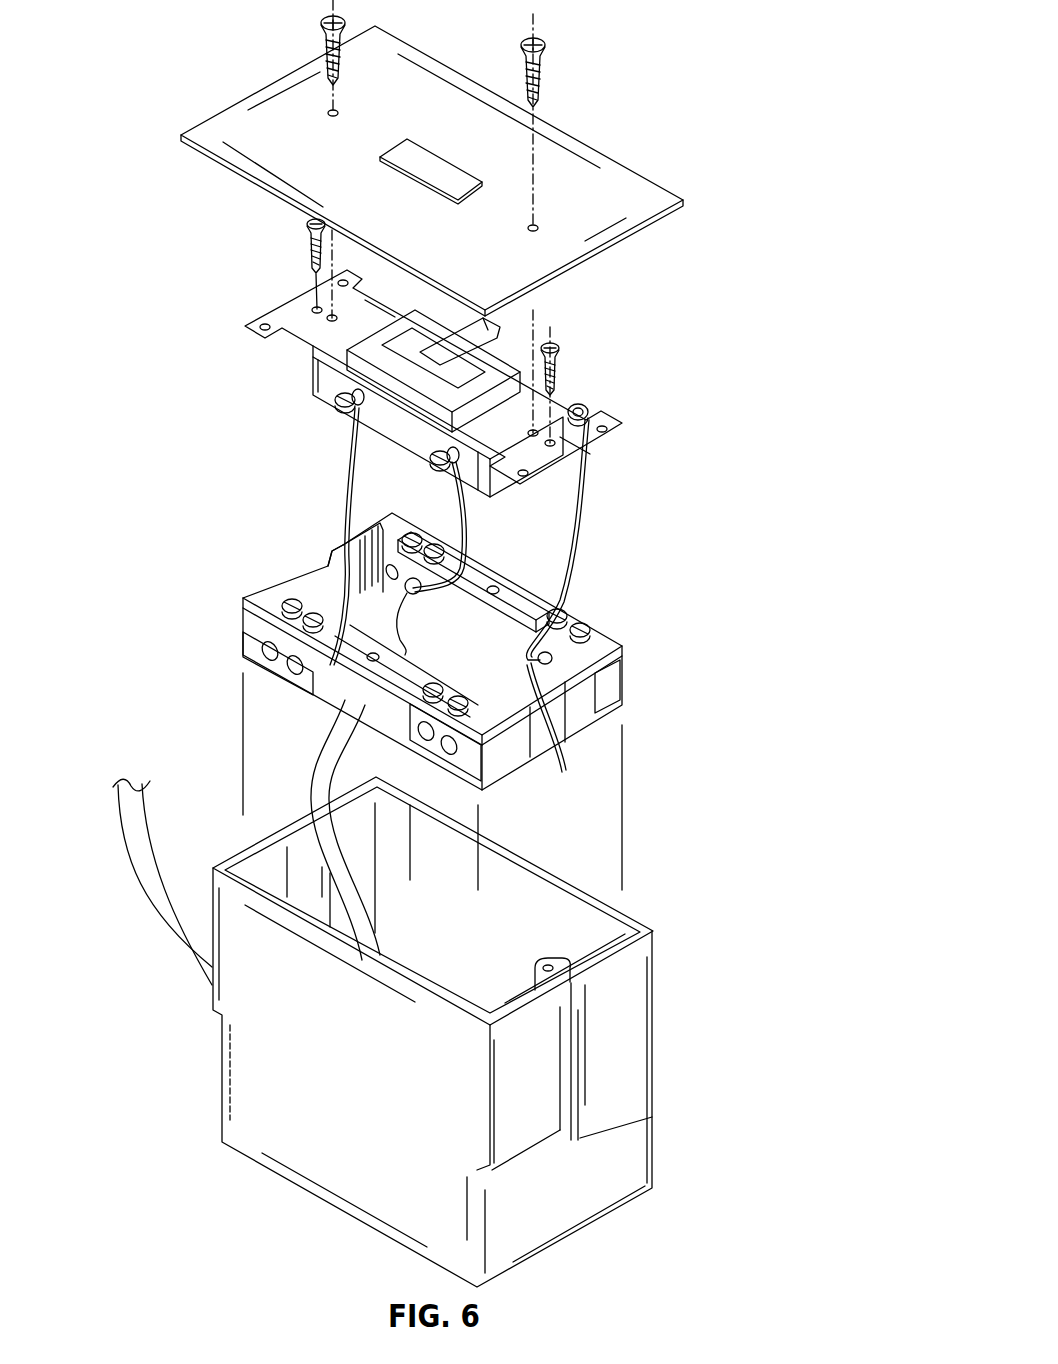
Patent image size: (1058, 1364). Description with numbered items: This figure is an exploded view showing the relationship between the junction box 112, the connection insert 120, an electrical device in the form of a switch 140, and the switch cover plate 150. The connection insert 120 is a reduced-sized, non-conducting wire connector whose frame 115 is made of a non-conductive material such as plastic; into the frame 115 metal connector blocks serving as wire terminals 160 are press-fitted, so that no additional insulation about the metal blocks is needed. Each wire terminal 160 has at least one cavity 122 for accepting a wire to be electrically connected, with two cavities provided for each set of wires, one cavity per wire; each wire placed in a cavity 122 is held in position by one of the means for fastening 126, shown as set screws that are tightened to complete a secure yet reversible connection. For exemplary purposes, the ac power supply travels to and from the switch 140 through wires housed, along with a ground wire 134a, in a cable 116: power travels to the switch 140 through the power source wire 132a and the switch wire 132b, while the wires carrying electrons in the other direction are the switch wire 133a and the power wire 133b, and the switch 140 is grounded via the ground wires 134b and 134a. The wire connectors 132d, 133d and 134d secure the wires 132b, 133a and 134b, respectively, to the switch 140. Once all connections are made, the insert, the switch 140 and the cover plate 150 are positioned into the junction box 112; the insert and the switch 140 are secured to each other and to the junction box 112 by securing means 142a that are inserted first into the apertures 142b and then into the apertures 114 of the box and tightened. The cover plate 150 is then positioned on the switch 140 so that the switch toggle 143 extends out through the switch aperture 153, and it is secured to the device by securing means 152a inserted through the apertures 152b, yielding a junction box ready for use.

The junction box 112 is at (195, 1071).
The apertures 114 is at (552, 965).
The frame 115 is at (577, 700).
The cable 116 is at (313, 795).
The non-conducting electrical wire connector insert 120 is at (200, 509).
The cavity 122 is at (440, 575).
The means for fastening 126 is at (318, 611).
The power source wire 132a is at (328, 705).
The switch wire 132b is at (343, 545).
The wire connector 132d is at (330, 390).
The switch wire 133a is at (478, 512).
The power wire 133b is at (390, 540).
The wire connector 133d is at (430, 450).
The ground wire 134a is at (568, 732).
The ground wire 134b is at (581, 487).
The wire connector 134d is at (580, 405).
The switch 140 is at (231, 308).
The securing means 142a is at (313, 240).
The apertures 142b is at (315, 308).
The switch 143 is at (480, 340).
The switch cover plate 150 is at (196, 96).
The securing means 152a is at (327, 43).
The apertures 152b is at (329, 111).
The switch aperture 153 is at (420, 167).
The wire terminal 160 is at (258, 640).